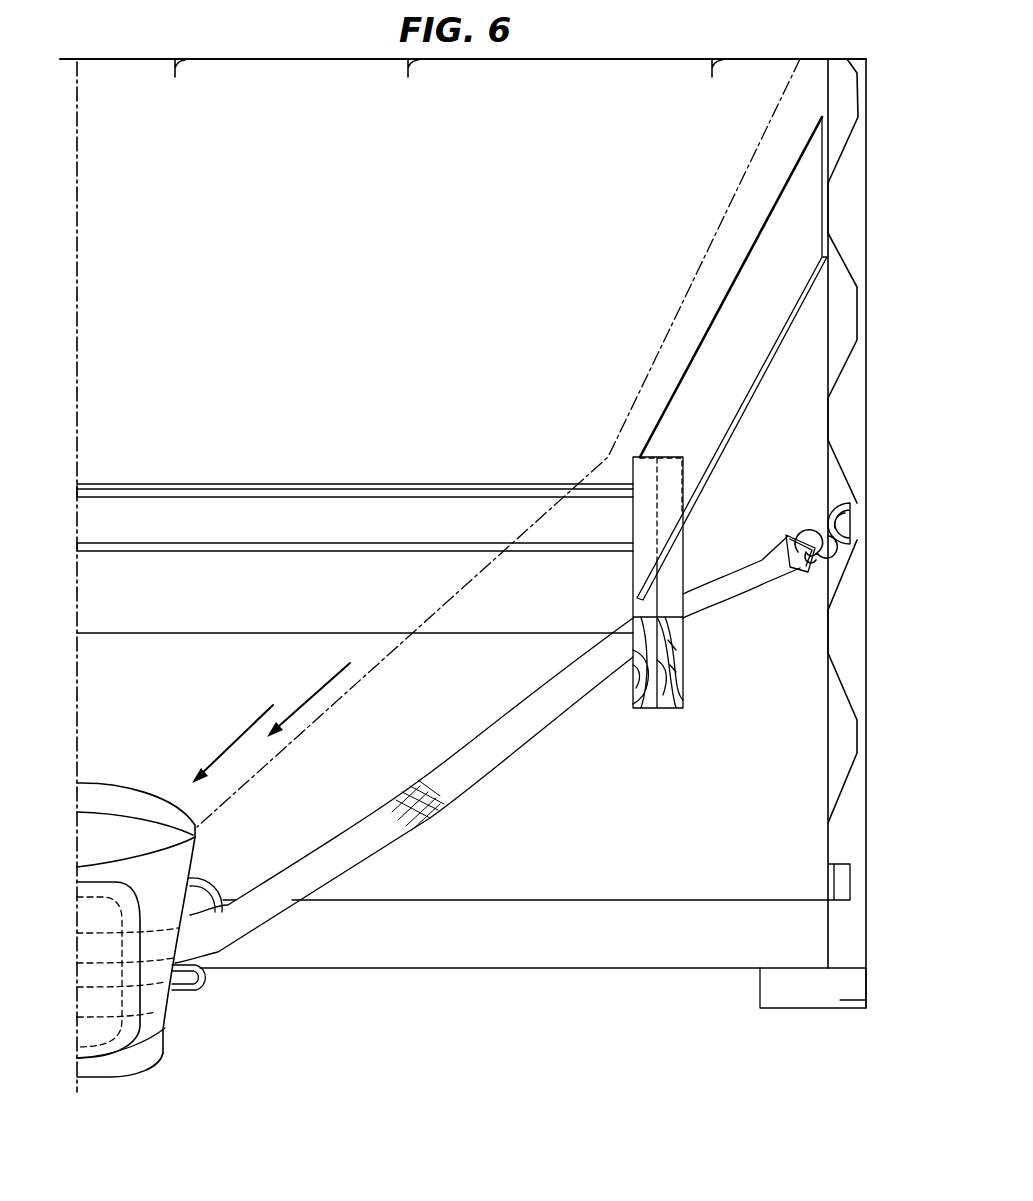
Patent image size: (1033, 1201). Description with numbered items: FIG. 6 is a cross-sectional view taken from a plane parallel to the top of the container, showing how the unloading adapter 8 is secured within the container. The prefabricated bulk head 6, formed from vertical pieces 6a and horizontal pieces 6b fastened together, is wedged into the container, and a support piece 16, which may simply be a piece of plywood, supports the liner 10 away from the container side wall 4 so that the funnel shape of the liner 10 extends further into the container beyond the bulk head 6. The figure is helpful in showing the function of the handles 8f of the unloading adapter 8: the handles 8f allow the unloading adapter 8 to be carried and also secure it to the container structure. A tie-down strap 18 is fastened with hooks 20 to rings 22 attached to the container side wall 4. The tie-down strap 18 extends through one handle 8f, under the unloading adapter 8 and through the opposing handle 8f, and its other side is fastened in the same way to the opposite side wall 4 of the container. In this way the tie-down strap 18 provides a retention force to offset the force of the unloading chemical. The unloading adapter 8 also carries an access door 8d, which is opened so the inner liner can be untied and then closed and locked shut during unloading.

The container side wall 4 is at (826, 648).
The prefabricated bulk head 6 is at (355, 465).
The vertical piece 6a is at (685, 688).
The horizontal piece 6b is at (183, 484).
The unloading adapter 8 is at (149, 926).
The access door 8d is at (105, 1063).
The handle 8f is at (188, 995).
The liner 10 is at (792, 110).
The support piece 16 is at (743, 338).
The tie-down strap 18 is at (500, 773).
The hook 20 is at (834, 548).
The ring 22 is at (858, 504).